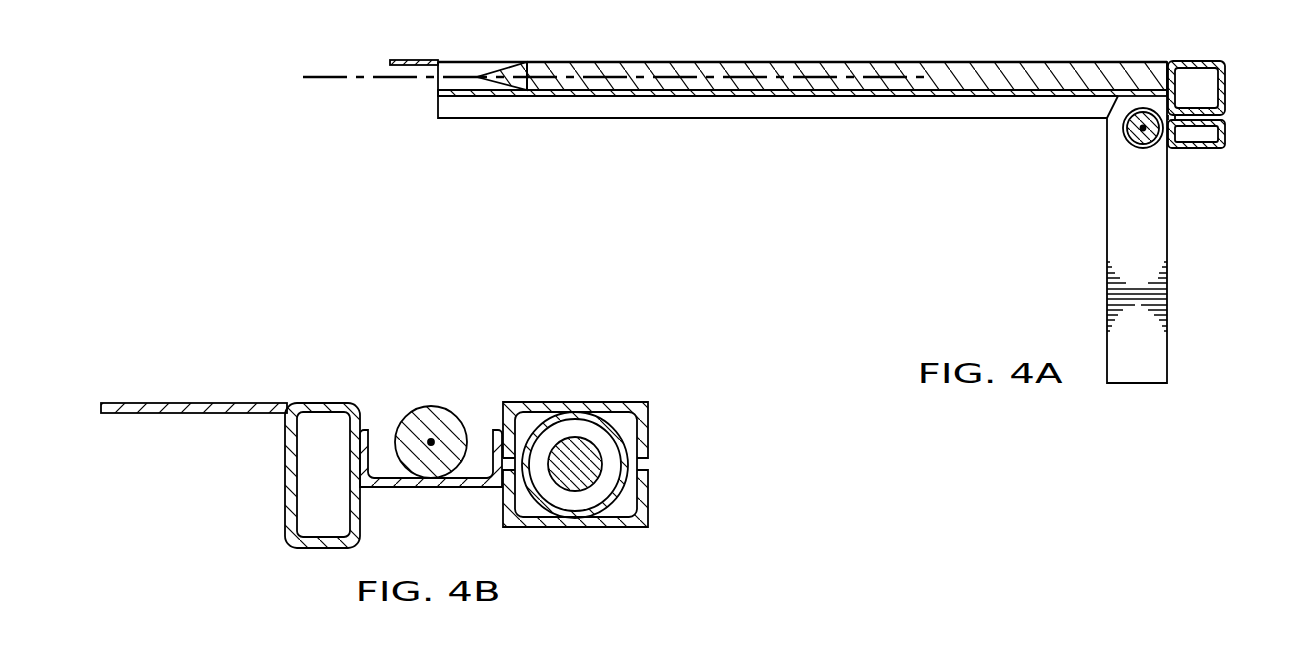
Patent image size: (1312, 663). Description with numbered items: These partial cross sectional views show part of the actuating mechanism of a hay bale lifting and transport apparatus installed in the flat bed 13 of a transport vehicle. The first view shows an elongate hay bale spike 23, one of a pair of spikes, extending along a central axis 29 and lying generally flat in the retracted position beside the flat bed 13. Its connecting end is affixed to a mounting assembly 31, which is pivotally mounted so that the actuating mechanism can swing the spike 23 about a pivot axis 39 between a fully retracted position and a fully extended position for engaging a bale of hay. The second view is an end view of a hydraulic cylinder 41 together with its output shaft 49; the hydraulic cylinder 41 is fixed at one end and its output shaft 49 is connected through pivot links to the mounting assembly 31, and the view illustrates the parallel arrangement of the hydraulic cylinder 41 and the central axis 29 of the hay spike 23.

In FIG. 4A, the flat bed 13 is at (408, 60).
In FIG. 4A, the hay bale spike 23 is at (677, 62).
In FIG. 4B, the hay bale spike 23 is at (418, 408).
In FIG. 4A, the central axis 29 is at (323, 75).
In FIG. 4B, the central axis 29 is at (443, 415).
In FIG. 4A, the mounting assembly 31 is at (1233, 93).
In FIG. 4A, the pivot axis 39 is at (1155, 142).
In FIG. 4B, the hydraulic cylinder 41 is at (605, 427).
In FIG. 4B, the output shaft 49 is at (567, 440).